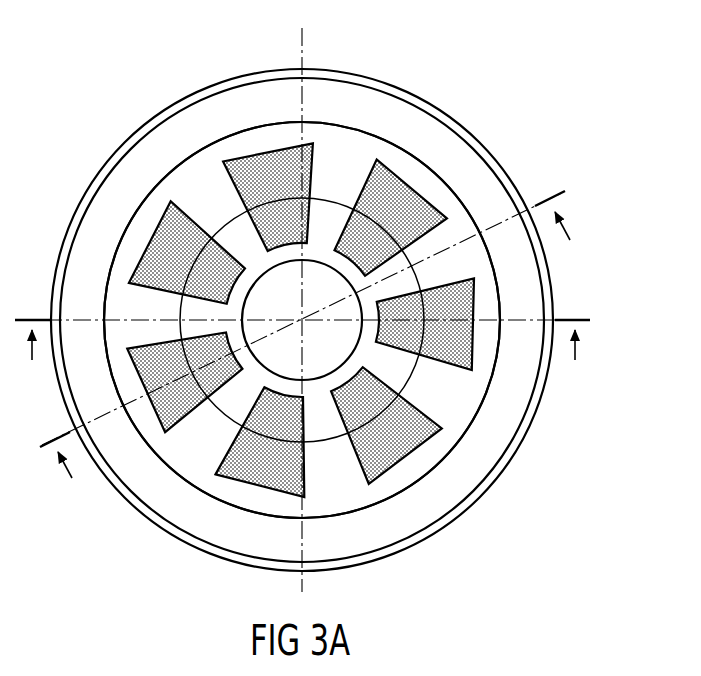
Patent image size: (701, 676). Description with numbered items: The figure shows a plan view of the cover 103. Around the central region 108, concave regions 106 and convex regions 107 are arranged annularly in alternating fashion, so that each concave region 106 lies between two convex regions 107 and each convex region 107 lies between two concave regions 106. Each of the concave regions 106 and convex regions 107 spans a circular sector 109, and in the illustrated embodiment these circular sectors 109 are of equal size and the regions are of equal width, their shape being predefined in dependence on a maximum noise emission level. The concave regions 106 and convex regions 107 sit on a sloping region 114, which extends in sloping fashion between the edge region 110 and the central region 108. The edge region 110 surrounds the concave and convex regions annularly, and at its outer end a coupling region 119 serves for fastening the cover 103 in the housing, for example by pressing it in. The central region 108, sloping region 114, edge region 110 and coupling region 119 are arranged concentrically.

The cover 103 is at (328, 306).
The concave region 106 is at (293, 324).
The convex region 107 is at (300, 320).
The central region 108 is at (302, 320).
The circular sector 109 is at (298, 43).
The edge region 110 is at (475, 473).
The sloping region 114 is at (358, 165).
The coupling region 119 is at (520, 428).